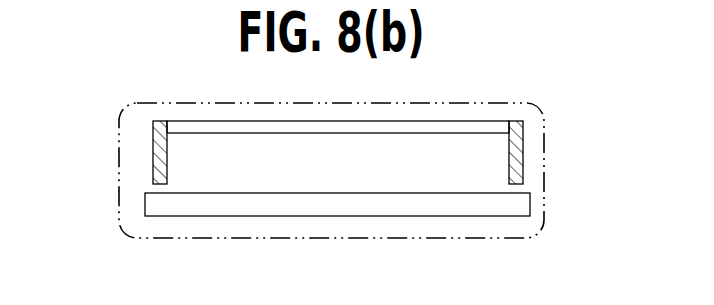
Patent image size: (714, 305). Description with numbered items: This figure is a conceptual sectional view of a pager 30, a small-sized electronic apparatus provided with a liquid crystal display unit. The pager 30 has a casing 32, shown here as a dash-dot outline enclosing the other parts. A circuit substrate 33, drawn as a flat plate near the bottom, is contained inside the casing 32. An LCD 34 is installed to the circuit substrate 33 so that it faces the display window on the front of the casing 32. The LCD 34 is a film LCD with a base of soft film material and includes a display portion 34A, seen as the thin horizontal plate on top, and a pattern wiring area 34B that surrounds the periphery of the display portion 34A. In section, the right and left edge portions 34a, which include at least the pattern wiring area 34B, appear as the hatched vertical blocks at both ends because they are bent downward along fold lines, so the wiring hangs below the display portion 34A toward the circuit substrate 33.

The pager 30 is at (352, 164).
The casing 32 is at (119, 202).
The circuit substrate 33 is at (357, 207).
The LCD 34 is at (332, 122).
The display portion 34A is at (387, 127).
The pattern wiring area 34B is at (153, 147).
The right and left edge portions 34a is at (167, 175).